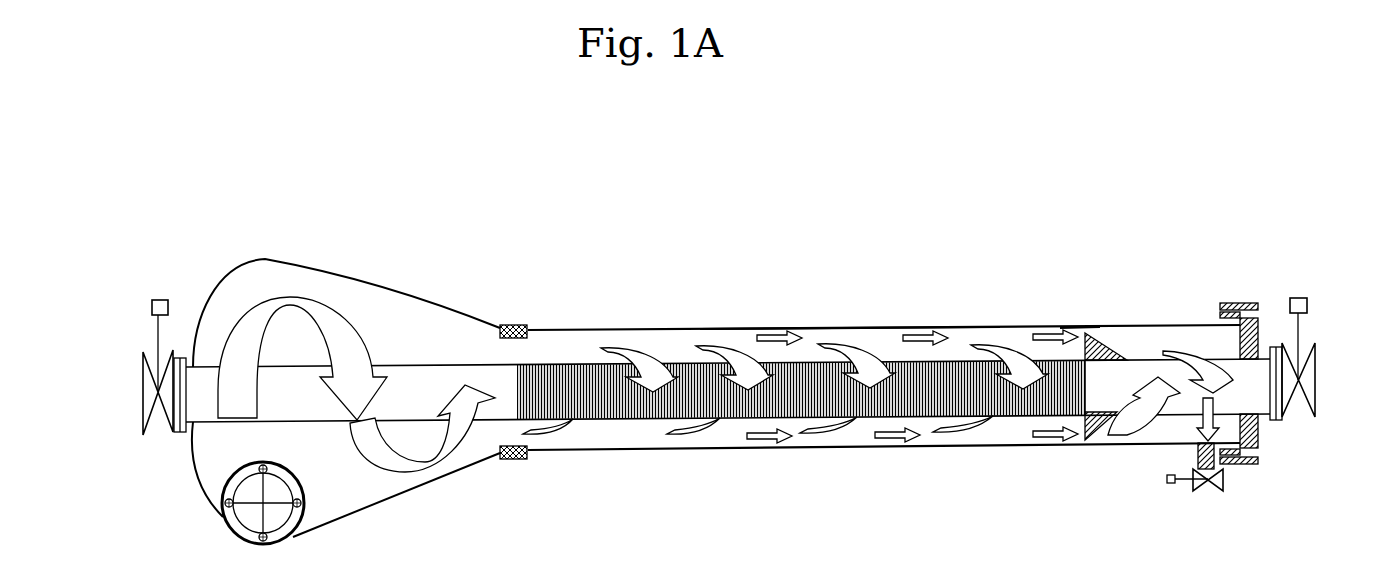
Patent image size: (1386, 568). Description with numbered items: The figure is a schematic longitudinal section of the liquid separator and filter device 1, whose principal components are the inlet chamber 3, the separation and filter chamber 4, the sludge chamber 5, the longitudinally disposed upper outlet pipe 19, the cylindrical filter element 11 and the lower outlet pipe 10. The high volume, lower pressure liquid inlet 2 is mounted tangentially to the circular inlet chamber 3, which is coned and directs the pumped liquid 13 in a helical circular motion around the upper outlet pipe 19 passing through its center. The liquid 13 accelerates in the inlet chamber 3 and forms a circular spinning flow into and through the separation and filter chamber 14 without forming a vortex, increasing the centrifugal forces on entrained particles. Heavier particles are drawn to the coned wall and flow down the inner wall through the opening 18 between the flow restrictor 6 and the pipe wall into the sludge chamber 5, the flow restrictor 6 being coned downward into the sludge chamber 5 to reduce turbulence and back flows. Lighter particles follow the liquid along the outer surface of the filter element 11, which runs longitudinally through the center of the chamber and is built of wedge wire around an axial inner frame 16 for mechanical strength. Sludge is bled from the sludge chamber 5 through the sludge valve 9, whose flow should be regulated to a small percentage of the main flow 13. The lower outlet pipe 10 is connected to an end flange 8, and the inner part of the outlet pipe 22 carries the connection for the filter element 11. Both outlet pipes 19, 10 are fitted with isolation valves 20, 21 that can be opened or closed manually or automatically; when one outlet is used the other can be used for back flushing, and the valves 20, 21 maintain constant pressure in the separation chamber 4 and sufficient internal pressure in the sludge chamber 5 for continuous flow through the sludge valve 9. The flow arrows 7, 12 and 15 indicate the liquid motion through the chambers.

The liquid separator and filter device 1 is at (797, 305).
The liquid inlet 2 is at (300, 537).
The inlet chamber 3 is at (357, 482).
The separation and filter chamber 4 is at (597, 427).
The sludge chamber 5 is at (1165, 425).
The flow restrictor 6 is at (1103, 345).
The rear chamber 7 is at (1125, 372).
The end flange 8 is at (1247, 292).
The sludge valve 9 is at (1210, 496).
The lower outlet pipe 10 is at (1257, 395).
The cylindrical filter element 11 is at (787, 392).
The front chamber 12 is at (432, 377).
The pumped liquid 13 is at (323, 310).
The separation and filter chamber 14 is at (630, 352).
The return flow 15 is at (1213, 363).
The inner frame 16 is at (690, 398).
The opening 18 is at (1085, 326).
The upper outlet pipe 19 is at (203, 405).
The isolation valve 20 is at (129, 365).
The isolation valve 21 is at (1318, 348).
The inner part of the outlet pipe 22 is at (1070, 403).